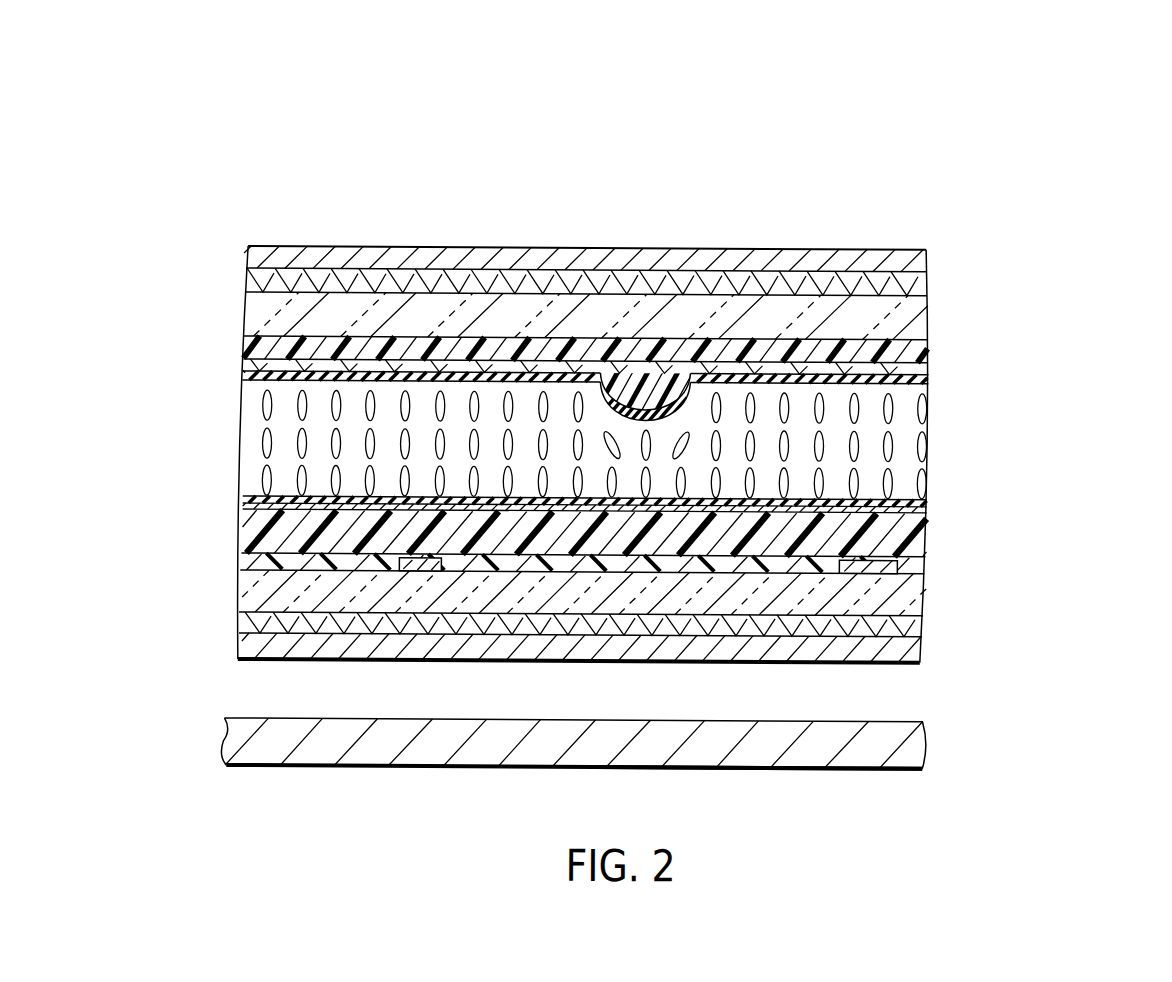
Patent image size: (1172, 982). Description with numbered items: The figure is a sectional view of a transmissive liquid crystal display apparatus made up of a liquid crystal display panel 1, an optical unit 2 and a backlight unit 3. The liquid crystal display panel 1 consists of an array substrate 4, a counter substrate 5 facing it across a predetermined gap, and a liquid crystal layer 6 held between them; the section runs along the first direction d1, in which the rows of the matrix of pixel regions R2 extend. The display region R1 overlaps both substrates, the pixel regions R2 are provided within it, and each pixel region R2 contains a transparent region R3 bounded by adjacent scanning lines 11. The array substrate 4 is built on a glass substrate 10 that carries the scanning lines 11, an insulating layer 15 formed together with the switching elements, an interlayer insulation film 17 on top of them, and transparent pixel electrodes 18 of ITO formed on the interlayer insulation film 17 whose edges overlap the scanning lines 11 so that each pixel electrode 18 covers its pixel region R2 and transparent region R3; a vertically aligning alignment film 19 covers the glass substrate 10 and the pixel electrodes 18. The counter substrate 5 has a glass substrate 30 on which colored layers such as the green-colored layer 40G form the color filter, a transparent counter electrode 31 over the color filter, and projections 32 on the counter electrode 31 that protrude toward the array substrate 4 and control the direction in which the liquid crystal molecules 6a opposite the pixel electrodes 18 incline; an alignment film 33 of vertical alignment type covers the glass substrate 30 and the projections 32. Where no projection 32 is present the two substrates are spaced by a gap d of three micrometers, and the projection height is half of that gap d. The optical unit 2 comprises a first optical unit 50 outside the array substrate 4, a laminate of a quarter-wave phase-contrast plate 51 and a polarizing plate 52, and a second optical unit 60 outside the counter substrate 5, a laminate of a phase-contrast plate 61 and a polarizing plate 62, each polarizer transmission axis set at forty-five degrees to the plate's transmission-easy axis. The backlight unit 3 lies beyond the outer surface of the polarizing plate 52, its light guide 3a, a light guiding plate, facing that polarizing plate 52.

The liquid crystal display panel 1 is at (1112, 341).
The optical unit 2 is at (140, 245).
The backlight unit 3 is at (625, 779).
The light guide 3a is at (840, 749).
The array substrate 4 is at (957, 595).
The counter substrate 5 is at (952, 294).
The liquid crystal layer 6 is at (633, 440).
The liquid crystal molecules 6a is at (925, 482).
The glass substrate 10 is at (338, 600).
The scanning lines 11 is at (415, 569).
The insulating layer 15 is at (487, 557).
The interlayer insulation film 17 is at (540, 540).
The pixel electrode 18 is at (280, 506).
The alignment film 19 is at (700, 498).
The glass substrate 30 is at (280, 300).
The counter electrode 31 is at (918, 366).
The projections 32 is at (648, 372).
The alignment film 33 is at (920, 379).
The green-colored layer 40G is at (520, 346).
The first optical unit 50 is at (185, 612).
The phase-contrast plate 51 is at (245, 622).
The polarizing plate 52 is at (245, 648).
The second optical unit 60 is at (185, 248).
The phase-contrast plate 61 is at (247, 287).
The polarizing plate 62 is at (247, 262).
The display region R1 is at (927, 52).
The pixel regions R2 is at (927, 106).
The transparent regions R3 is at (958, 147).
The gap d is at (232, 380).
The first direction d1 is at (1171, 215).